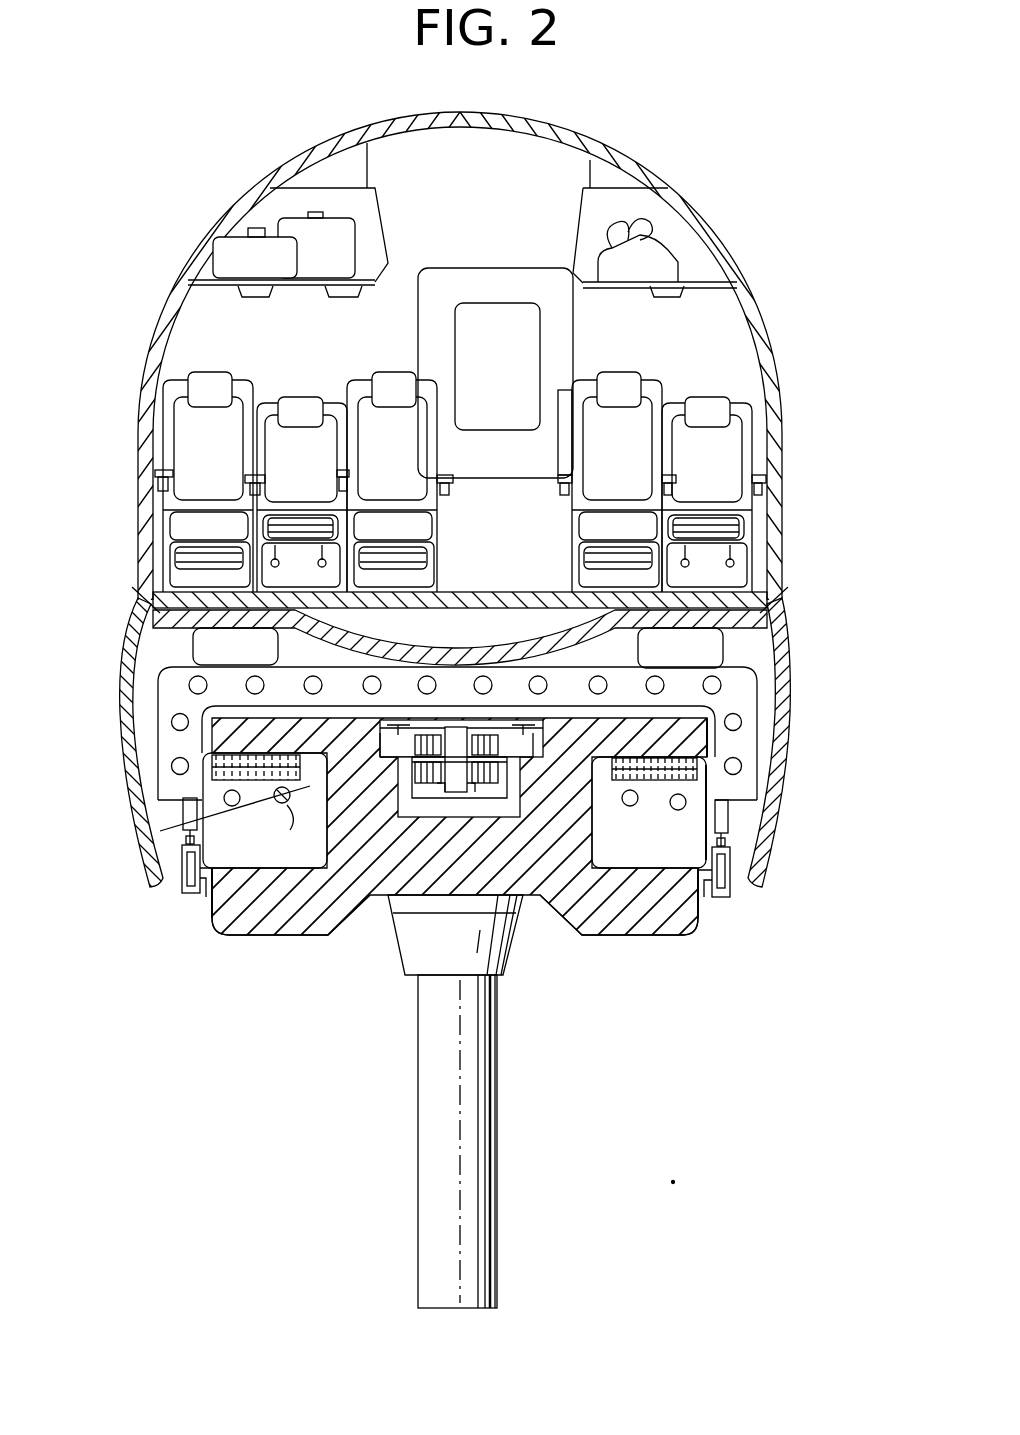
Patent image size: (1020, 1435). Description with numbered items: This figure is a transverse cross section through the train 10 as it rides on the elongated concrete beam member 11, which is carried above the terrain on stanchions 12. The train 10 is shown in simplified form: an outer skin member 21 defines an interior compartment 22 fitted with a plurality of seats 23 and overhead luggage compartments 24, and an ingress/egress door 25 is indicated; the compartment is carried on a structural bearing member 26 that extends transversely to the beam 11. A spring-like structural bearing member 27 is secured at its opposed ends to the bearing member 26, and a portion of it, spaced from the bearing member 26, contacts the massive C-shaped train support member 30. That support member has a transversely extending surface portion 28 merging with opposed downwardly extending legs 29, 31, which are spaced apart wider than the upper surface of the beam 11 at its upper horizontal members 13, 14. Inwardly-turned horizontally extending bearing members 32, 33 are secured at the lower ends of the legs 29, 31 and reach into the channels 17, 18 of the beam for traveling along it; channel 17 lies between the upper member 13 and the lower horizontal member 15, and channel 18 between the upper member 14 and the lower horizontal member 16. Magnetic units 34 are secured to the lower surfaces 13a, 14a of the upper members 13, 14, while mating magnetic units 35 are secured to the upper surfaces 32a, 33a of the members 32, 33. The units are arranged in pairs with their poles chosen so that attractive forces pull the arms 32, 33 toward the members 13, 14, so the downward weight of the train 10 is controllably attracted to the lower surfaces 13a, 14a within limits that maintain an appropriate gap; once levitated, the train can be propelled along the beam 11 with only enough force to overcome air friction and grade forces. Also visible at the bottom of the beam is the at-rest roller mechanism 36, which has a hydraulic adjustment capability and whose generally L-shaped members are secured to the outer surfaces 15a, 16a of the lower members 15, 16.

The train 10 is at (832, 255).
The elongated concrete beam member 11 is at (676, 948).
The stanchions 12 is at (496, 1126).
The horizontal member 13 is at (212, 735).
The lower surface 13a is at (132, 822).
The horizontal member 14 is at (693, 730).
The lower surface 14a is at (693, 753).
The horizontal member 15 is at (247, 927).
The outer surface 15a is at (209, 903).
The horizontal member 16 is at (684, 917).
The outer surface 16a is at (701, 905).
The channel 17 is at (329, 933).
The channel 18 is at (607, 852).
The outer skin member 21 is at (781, 383).
The interior compartment 22 is at (490, 226).
The seats 23 is at (338, 362).
The overhead luggage compartments 24 is at (243, 213).
The ingress/egress door 25 is at (515, 510).
The structural bearing member 26 is at (160, 598).
The spring-like structural bearing member 27 is at (755, 620).
The transversely extending surface portion 28 is at (160, 662).
The downwardly extending leg 29 is at (163, 747).
The C-shaped train support member 30 is at (762, 664).
The downwardly extending leg 31 is at (743, 807).
The inwardly-turned horizontally extending bearing member 32 is at (248, 803).
The upper surface 32a is at (247, 760).
The inwardly-turned horizontally extending bearing member 33 is at (612, 805).
The upper surface 33a is at (740, 797).
The magnetic units 34 is at (697, 765).
The mating magnetic units 35 is at (327, 933).
The at-rest roller mechanism 36 is at (193, 910).